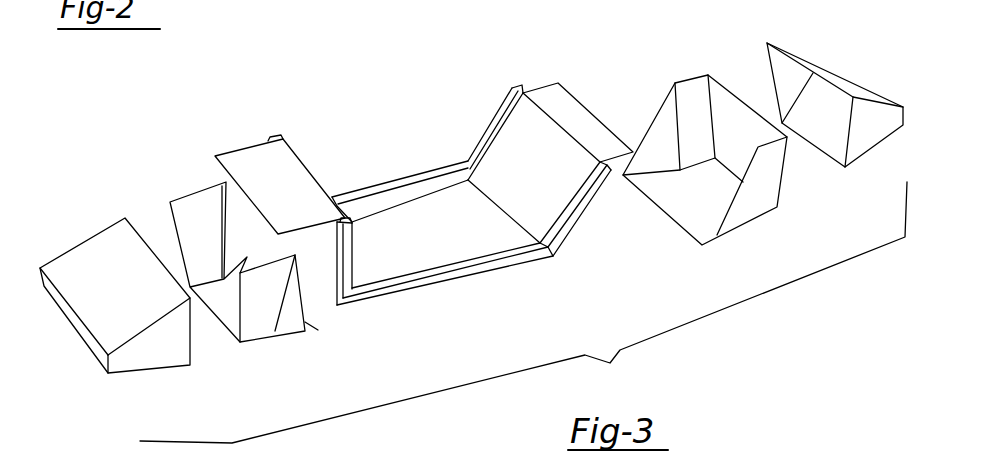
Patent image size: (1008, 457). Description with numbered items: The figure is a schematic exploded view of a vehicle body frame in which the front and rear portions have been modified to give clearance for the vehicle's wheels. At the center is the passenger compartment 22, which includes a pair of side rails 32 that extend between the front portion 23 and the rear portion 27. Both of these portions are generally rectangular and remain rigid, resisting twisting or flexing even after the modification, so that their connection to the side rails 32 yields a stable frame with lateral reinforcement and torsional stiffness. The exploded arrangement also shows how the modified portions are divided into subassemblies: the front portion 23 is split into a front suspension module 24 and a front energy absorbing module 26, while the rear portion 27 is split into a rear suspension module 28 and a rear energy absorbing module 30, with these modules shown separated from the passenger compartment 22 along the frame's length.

In FIG. 3, the passenger compartment 22 is at (443, 244).
In FIG. 3, the front portion 23 is at (253, 170).
In FIG. 2, the front suspension module 24 is at (396, 0).
In FIG. 3, the front suspension module 24 is at (268, 320).
In FIG. 2, the front energy absorbing module 26 is at (233, 9).
In FIG. 3, the front energy absorbing module 26 is at (152, 360).
In FIG. 3, the rear portion 27 is at (588, 82).
In FIG. 3, the rear suspension module 28 is at (741, 224).
In FIG. 3, the rear energy absorbing module 30 is at (833, 64).
In FIG. 3, the side rails 32 is at (382, 184).